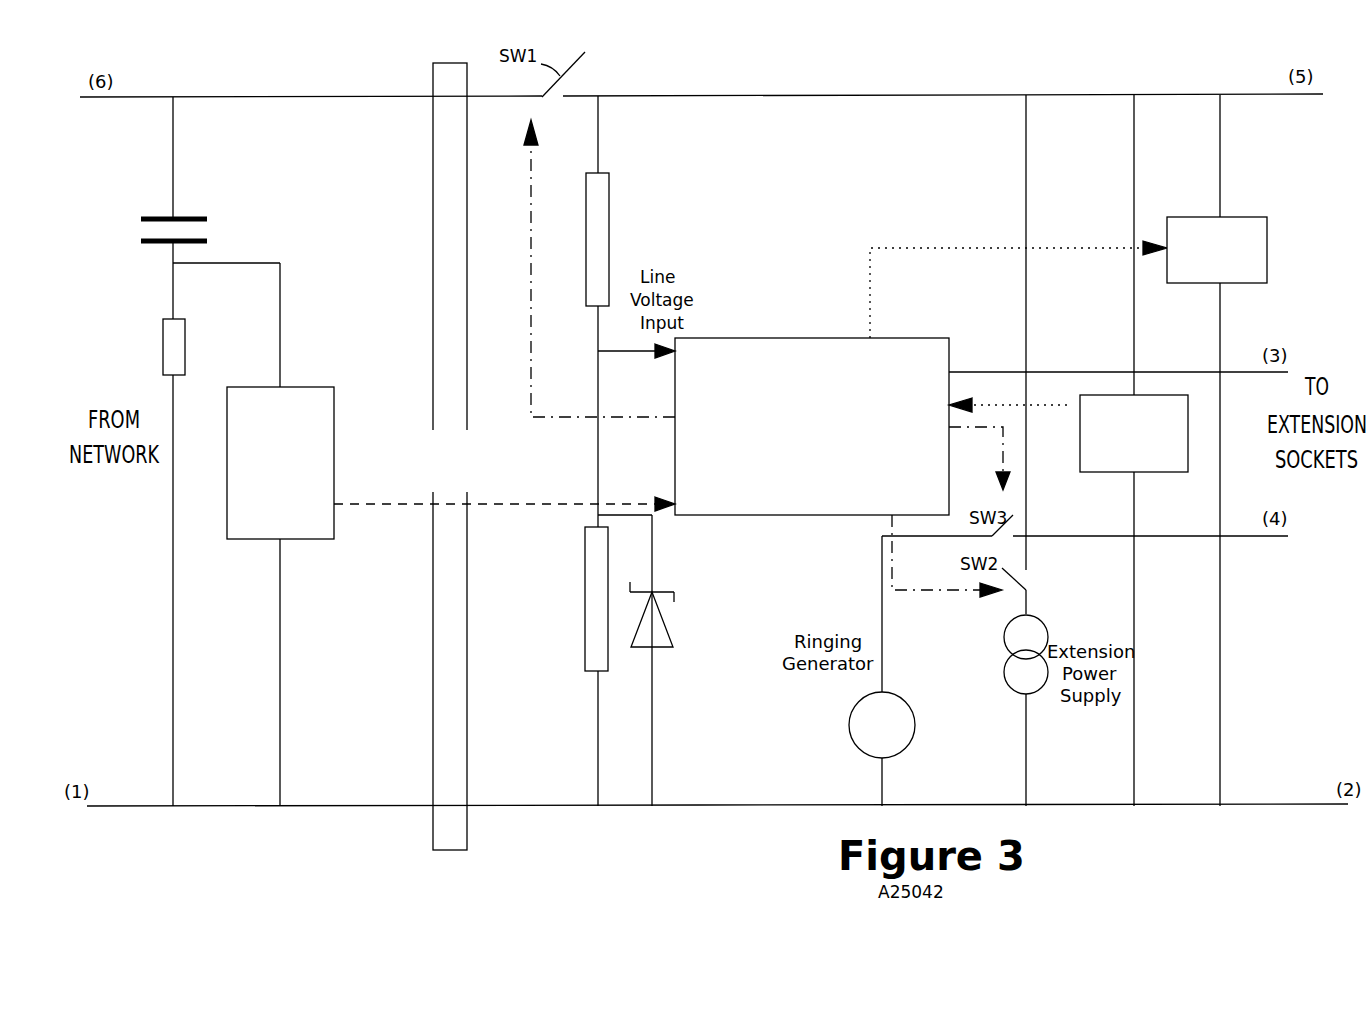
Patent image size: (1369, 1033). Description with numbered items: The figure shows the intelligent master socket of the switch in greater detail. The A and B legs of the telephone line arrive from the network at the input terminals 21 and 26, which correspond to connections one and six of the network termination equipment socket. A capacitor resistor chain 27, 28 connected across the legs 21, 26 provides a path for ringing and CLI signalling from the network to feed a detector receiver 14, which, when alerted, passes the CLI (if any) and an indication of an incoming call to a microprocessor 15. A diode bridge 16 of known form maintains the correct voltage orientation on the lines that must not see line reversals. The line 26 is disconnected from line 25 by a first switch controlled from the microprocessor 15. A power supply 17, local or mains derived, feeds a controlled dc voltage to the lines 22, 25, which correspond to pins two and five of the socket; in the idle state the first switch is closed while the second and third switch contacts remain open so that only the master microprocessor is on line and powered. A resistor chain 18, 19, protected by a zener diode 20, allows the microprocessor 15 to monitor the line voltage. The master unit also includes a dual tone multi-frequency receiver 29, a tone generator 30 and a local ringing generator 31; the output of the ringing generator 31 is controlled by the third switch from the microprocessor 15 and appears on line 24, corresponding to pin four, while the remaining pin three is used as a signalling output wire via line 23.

The detector receiver 14 is at (325, 387).
The microprocessor 15 is at (826, 338).
The diode bridge 16 is at (467, 242).
The power supply 17 is at (1004, 683).
The resistor 18 is at (609, 229).
The resistor 19 is at (608, 660).
The zener diode 20 is at (665, 622).
The input terminal 21 is at (130, 806).
The line 22 is at (1302, 805).
The line 23 is at (1269, 376).
The line 24 is at (1269, 540).
The line 25 is at (1290, 96).
The input terminal 26 is at (141, 99).
The capacitor 27 is at (183, 219).
The resistor 28 is at (185, 352).
The dual tone multi-frequency receiver 29 is at (1109, 473).
The tone generator 30 is at (1188, 217).
The local ringing generator 31 is at (850, 741).